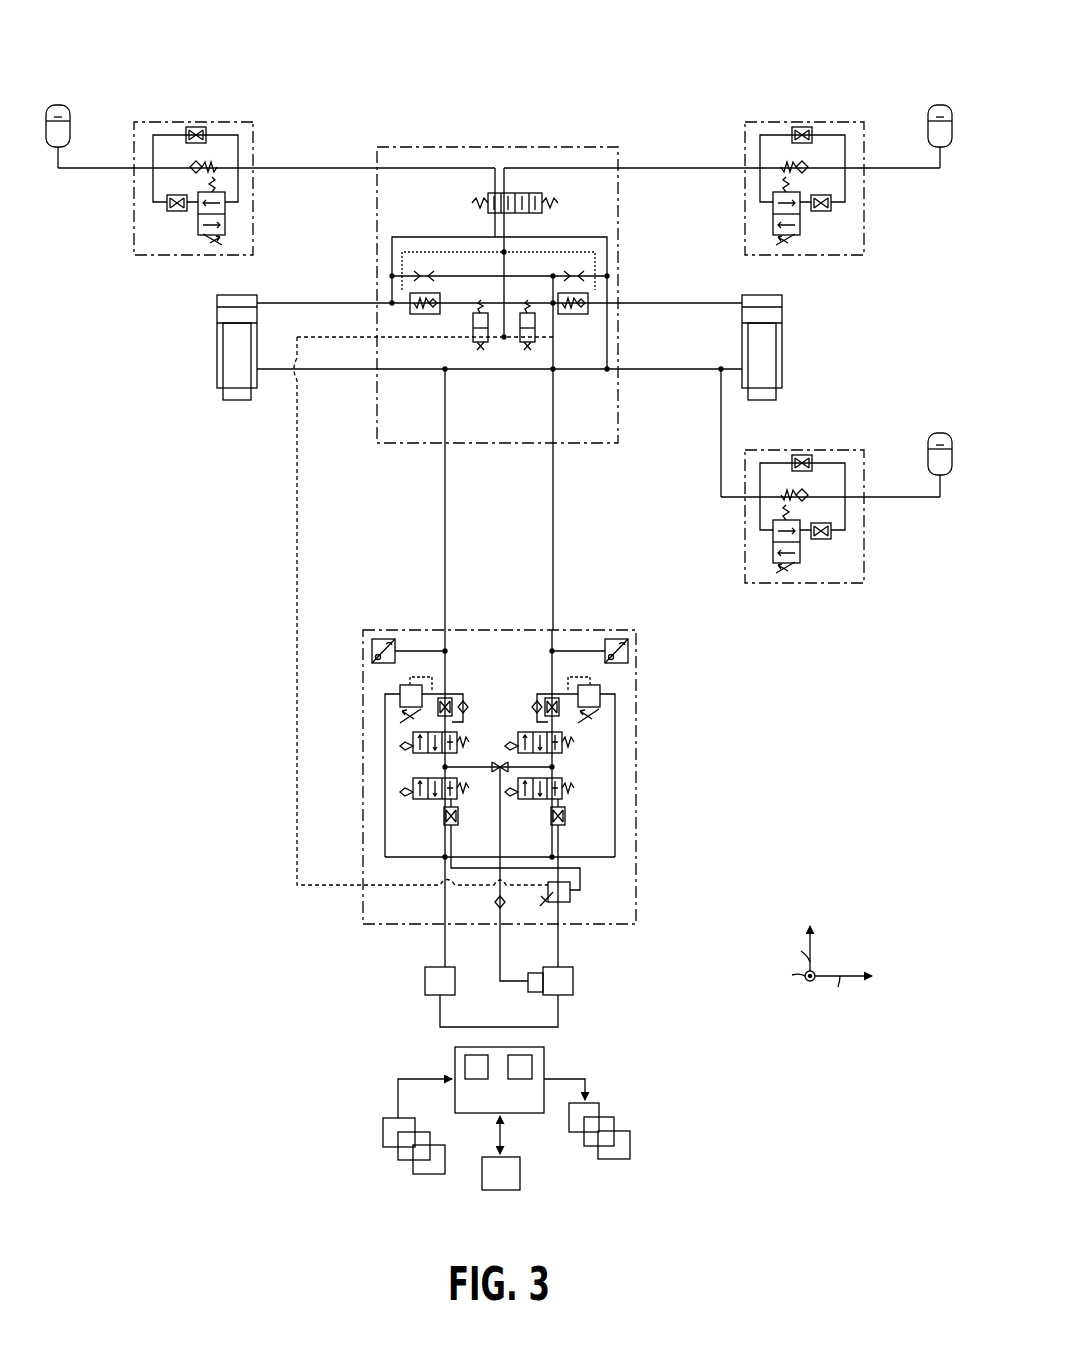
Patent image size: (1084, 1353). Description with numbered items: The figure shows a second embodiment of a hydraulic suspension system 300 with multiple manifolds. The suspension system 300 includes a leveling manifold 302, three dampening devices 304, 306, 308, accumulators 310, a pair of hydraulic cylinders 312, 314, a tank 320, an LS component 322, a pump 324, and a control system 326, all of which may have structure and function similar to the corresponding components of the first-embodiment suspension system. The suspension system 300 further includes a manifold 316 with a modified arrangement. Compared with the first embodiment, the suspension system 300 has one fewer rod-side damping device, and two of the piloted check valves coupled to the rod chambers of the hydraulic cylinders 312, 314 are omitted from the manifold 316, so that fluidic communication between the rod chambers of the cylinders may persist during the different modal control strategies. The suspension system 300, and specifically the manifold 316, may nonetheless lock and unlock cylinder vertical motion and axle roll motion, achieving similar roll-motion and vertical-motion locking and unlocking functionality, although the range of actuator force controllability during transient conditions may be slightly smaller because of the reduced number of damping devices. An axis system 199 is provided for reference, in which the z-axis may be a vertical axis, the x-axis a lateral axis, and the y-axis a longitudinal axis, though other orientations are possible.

The hydraulic suspension system 300 is at (521, 43).
The leveling manifold 302 is at (365, 630).
The dampening device 304 is at (747, 450).
The dampening device 306 is at (747, 122).
The dampening device 308 is at (137, 122).
The accumulators 310 is at (940, 433).
The hydraulic cylinder 312 is at (188, 351).
The hydraulic cylinder 314 is at (806, 347).
The manifold 316 is at (378, 147).
The tank 320 is at (425, 989).
The LS component 322 is at (533, 992).
The pump 324 is at (603, 988).
The control system 326 is at (613, 1078).
The axis system 199 is at (847, 951).